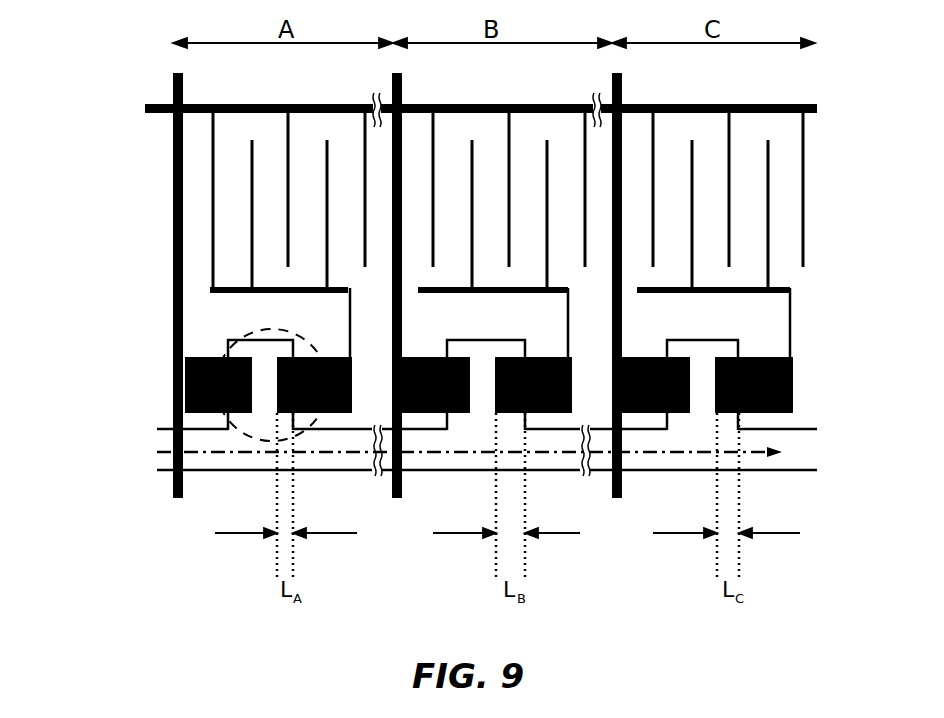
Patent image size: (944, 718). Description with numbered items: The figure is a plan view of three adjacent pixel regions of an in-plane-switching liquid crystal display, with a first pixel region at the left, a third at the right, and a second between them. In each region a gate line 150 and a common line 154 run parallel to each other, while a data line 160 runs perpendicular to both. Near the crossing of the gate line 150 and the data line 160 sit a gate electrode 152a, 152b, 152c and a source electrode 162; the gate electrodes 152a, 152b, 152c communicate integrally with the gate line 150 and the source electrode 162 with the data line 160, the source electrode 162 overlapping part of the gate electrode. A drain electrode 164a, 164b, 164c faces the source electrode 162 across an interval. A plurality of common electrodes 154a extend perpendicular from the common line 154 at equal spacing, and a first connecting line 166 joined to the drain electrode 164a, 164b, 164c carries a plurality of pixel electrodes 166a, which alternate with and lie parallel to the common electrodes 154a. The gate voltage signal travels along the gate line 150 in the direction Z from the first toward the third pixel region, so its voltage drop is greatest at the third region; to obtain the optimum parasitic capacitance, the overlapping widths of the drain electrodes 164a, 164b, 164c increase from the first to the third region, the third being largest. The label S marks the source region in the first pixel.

The gate line 150 is at (802, 452).
The gate electrode 152a is at (253, 337).
The gate electrode 152b is at (482, 350).
The gate electrode 152c is at (710, 348).
The common line 154 is at (813, 107).
The common electrode 154a is at (214, 133).
The data line 160 is at (175, 180).
The source electrode 162 is at (200, 415).
The drain electrode 164a is at (352, 413).
The drain electrode 164b is at (572, 413).
The drain electrode 164c is at (793, 417).
The first connecting line 166 is at (258, 286).
The pixel electrode 166a is at (248, 224).
The channel region S is at (240, 430).
The direction Z is at (212, 447).